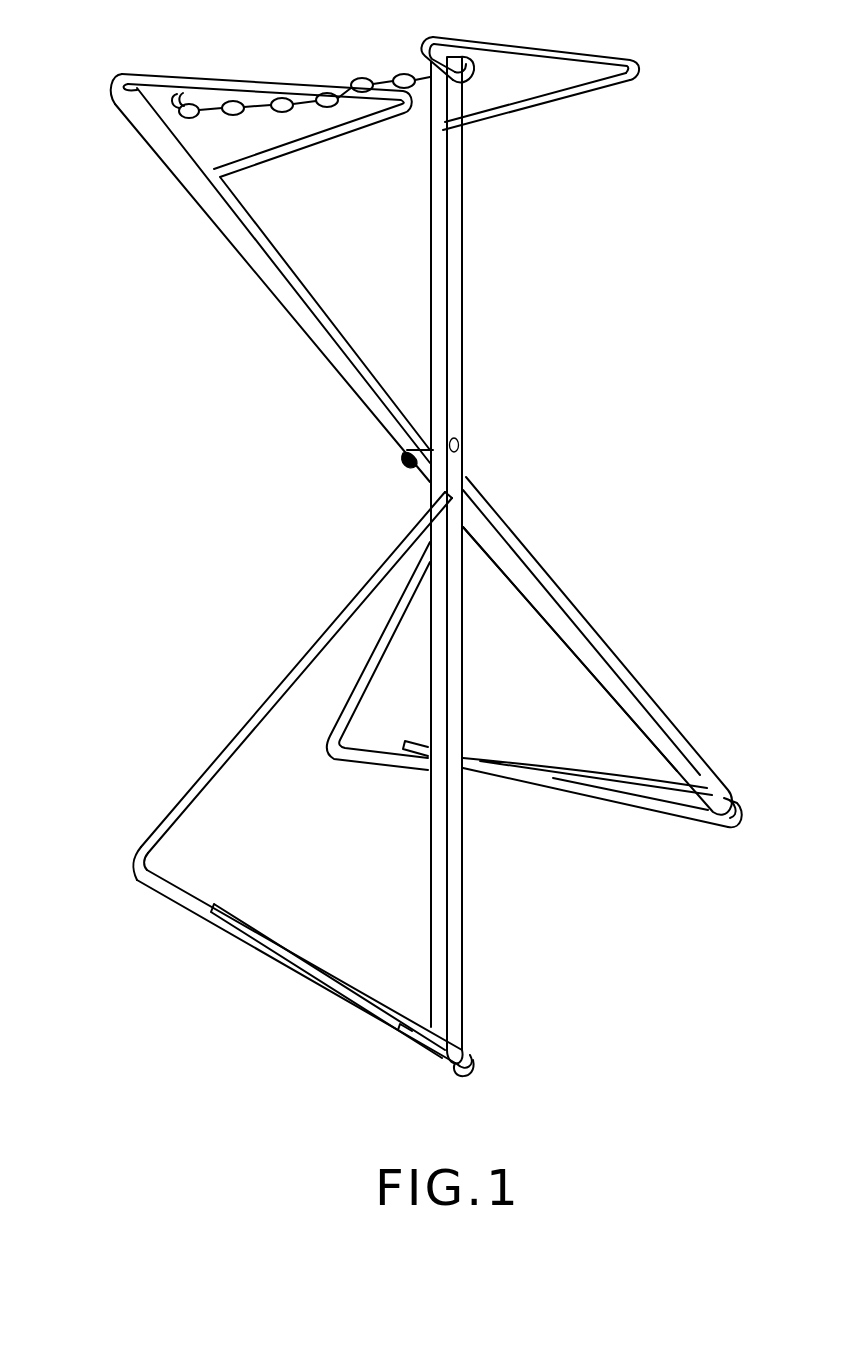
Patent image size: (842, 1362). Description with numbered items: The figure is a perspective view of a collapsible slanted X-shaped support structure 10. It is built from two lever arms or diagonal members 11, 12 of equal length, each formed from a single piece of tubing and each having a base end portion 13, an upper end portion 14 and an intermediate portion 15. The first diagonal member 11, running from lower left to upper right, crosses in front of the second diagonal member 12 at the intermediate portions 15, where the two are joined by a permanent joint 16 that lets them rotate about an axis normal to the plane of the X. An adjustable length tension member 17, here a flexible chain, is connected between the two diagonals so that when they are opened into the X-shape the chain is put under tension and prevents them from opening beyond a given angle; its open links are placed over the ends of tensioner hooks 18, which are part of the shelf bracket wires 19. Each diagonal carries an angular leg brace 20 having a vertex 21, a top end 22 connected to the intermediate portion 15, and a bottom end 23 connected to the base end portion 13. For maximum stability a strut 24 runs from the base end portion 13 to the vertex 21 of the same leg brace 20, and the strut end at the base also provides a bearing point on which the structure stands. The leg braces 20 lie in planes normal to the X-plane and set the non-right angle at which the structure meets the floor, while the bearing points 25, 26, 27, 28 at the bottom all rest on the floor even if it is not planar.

The collapsible slanted X-shaped support structure 10 is at (642, 403).
The first diagonal member 11 is at (463, 318).
The second diagonal member 12 is at (335, 345).
The base end portion 13 is at (688, 745).
The upper end portion 14 is at (168, 140).
The intermediate portion 15 is at (490, 510).
The permanent joint 16 is at (407, 452).
The adjustable length tension member 17 is at (398, 78).
The tensioner hook 18 is at (478, 63).
The shelf bracket wire 19 is at (640, 72).
The angular leg brace 20 is at (262, 718).
The vertex 21 is at (130, 858).
The top end 22 is at (436, 520).
The bottom end 23 is at (405, 1025).
The strut 24 is at (374, 1023).
The bearing point 25 is at (140, 880).
The bearing point 26 is at (340, 762).
The bearing point 27 is at (736, 826).
The bearing point 28 is at (457, 1080).